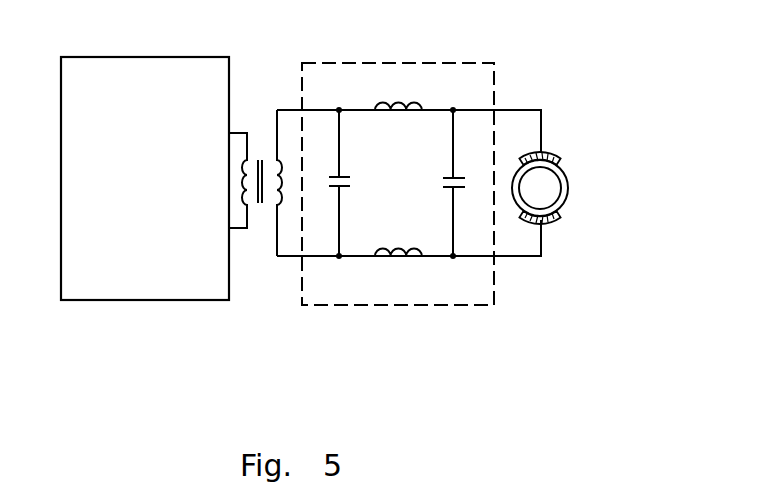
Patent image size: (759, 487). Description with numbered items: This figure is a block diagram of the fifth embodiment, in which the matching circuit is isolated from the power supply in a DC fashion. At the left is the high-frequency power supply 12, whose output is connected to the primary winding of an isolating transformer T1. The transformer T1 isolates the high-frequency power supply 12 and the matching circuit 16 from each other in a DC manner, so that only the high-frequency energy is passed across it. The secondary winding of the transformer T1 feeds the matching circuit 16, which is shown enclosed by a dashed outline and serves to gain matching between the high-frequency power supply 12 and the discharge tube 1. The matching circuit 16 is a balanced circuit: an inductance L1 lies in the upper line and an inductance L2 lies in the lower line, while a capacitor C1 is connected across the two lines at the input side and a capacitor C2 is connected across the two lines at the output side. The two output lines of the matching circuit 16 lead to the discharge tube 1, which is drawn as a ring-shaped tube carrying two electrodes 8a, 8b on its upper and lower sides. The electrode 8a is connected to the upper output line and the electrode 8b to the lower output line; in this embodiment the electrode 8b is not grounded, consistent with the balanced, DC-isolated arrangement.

The high-frequency power supply 12 is at (106, 57).
The isolating transformer T1 is at (265, 148).
The matching circuit 16 is at (461, 156).
The inductance L1 is at (398, 94).
The inductance L2 is at (398, 240).
The capacitor C1 is at (354, 183).
The capacitor C2 is at (464, 183).
The discharge tube 1 is at (570, 186).
The electrode 8a is at (561, 155).
The electrode 8b is at (560, 221).